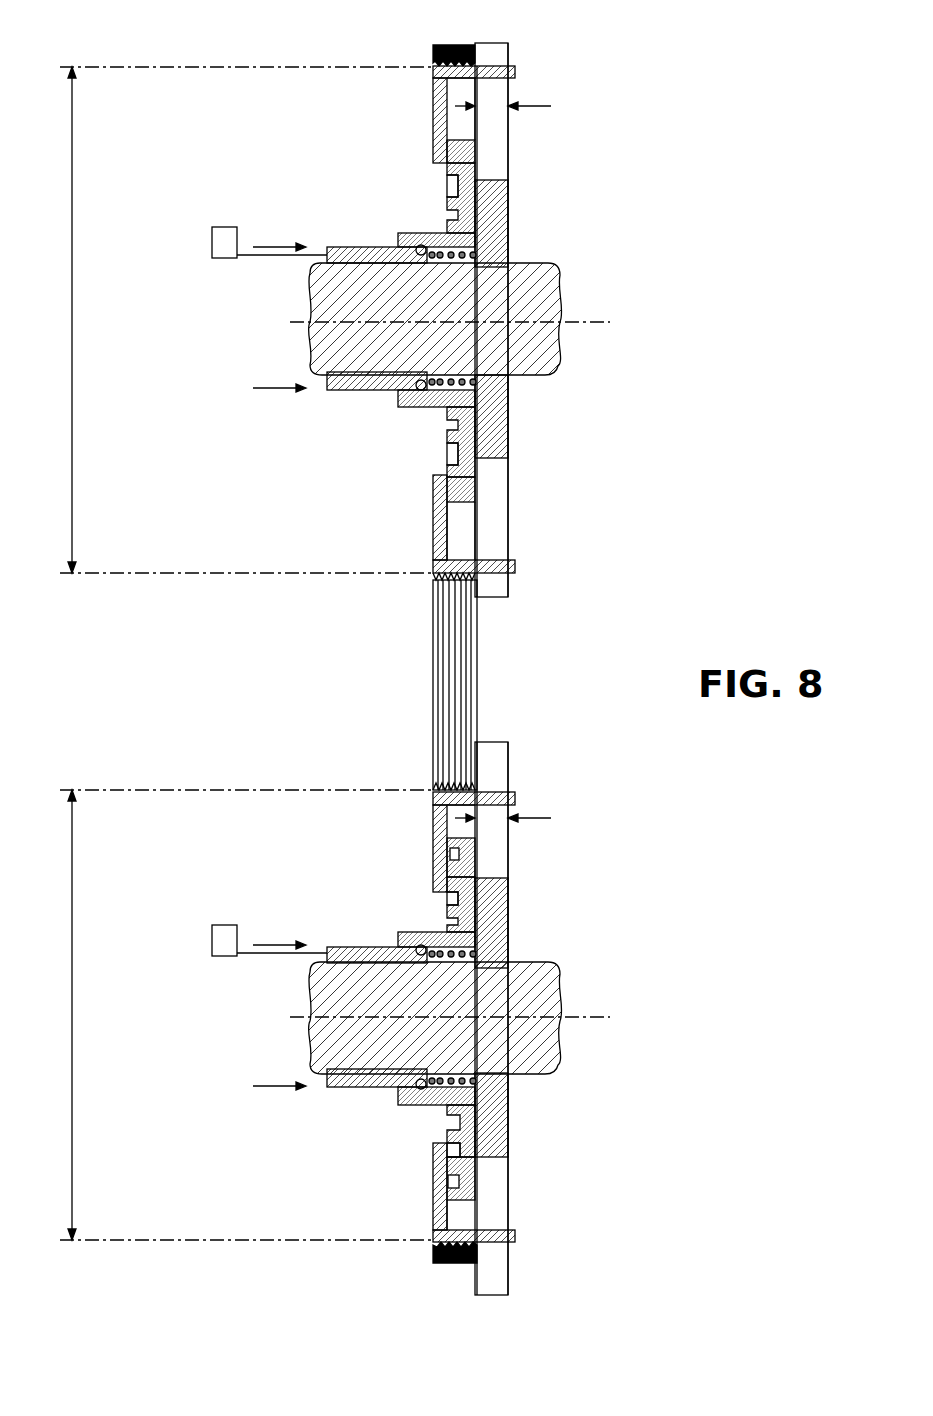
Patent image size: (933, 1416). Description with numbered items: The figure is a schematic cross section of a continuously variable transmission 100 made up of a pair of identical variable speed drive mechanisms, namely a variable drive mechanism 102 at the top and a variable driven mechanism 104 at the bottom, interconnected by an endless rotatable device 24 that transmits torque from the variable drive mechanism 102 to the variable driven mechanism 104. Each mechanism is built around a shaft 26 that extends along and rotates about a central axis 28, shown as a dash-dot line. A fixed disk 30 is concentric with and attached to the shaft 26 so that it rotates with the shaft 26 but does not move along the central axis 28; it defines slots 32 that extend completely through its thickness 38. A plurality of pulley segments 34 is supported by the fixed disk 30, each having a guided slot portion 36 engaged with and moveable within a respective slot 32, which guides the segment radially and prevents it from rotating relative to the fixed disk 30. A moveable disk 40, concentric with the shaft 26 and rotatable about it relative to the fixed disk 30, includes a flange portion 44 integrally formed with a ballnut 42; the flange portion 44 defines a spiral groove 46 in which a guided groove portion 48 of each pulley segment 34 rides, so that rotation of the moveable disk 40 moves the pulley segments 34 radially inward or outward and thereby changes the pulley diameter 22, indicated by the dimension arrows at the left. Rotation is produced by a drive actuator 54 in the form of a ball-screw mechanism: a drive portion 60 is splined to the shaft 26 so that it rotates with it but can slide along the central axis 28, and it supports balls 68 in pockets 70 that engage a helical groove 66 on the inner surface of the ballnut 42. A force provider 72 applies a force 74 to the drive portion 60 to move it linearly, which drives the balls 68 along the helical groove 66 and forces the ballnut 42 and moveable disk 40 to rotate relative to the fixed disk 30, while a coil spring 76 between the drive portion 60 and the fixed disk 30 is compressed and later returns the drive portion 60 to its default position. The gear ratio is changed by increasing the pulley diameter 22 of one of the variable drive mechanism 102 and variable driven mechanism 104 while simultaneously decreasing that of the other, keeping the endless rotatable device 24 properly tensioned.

The pulley diameter 22 is at (72, 258).
The endless rotatable device 24 is at (462, 648).
The shaft 26 is at (545, 283).
The central axis 28 is at (572, 324).
The fixed disk 30 is at (497, 50).
The slots 32 is at (500, 97).
The pulley segments 34 is at (433, 98).
The guided slot portion 36 is at (497, 84).
The thickness 38 is at (537, 108).
The moveable disk 40 is at (441, 200).
The ballnut 42 is at (408, 232).
The flange portion 44 is at (450, 160).
The spiral groove 46 is at (455, 186).
The guided groove portion 48 is at (455, 155).
The drive actuator 54 is at (366, 406).
The drive portion 60 is at (340, 249).
The helical groove 66 is at (458, 242).
The balls 68 is at (419, 253).
The pocket 70 is at (419, 381).
The force provider 72 is at (226, 227).
The force 74 is at (283, 245).
The coil spring 76 is at (463, 245).
The continuously variable transmission 100 is at (669, 95).
The variable drive mechanism 102 is at (546, 211).
The variable driven mechanism 104 is at (546, 937).